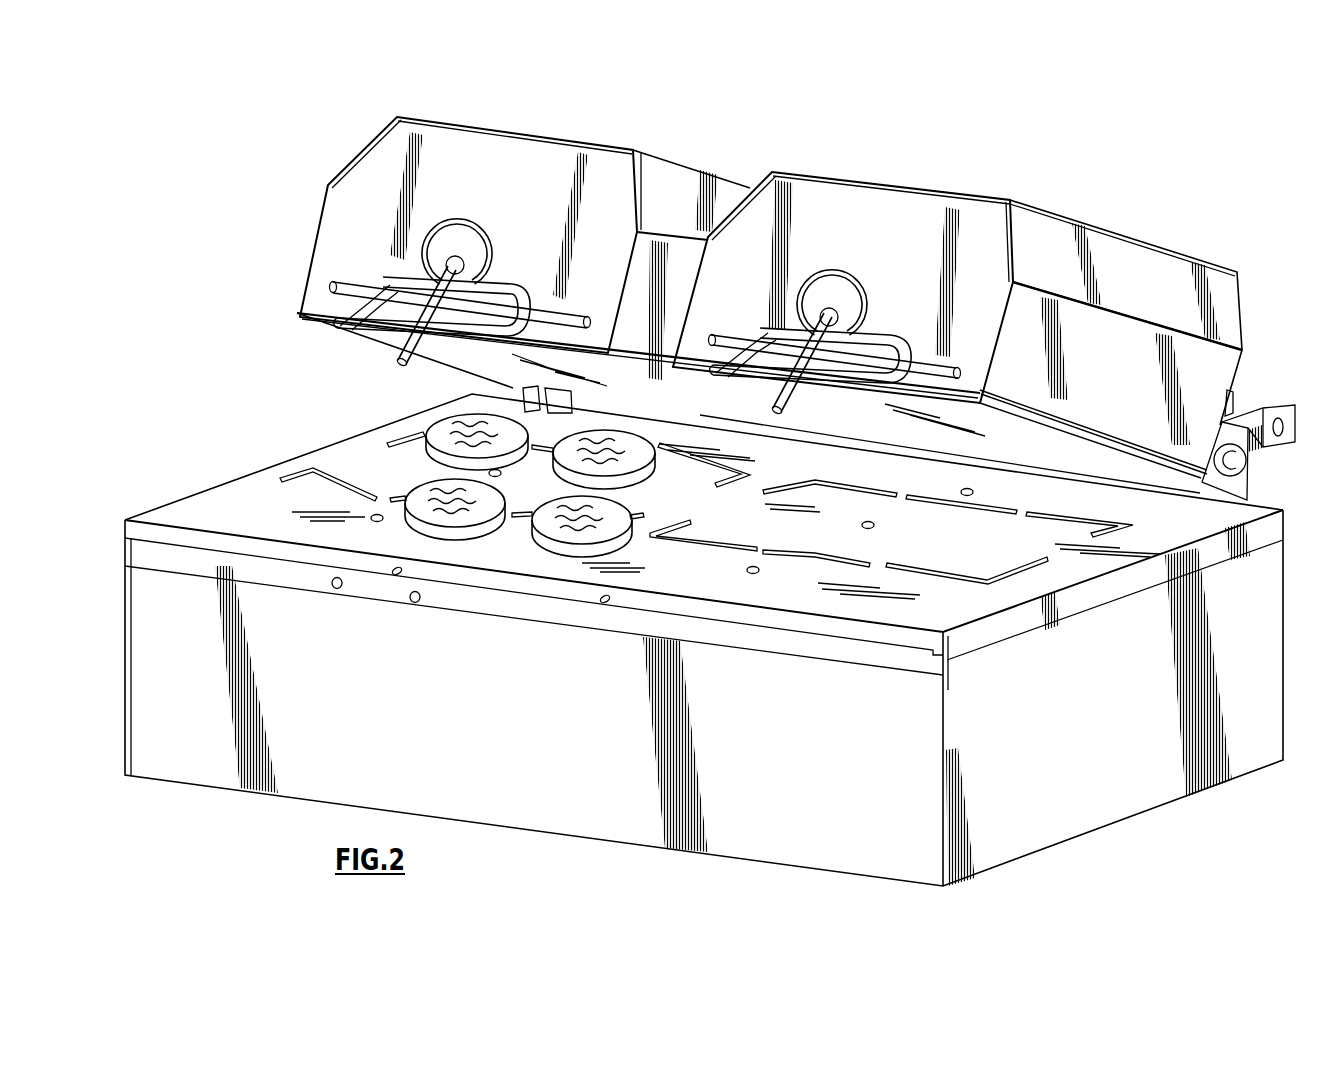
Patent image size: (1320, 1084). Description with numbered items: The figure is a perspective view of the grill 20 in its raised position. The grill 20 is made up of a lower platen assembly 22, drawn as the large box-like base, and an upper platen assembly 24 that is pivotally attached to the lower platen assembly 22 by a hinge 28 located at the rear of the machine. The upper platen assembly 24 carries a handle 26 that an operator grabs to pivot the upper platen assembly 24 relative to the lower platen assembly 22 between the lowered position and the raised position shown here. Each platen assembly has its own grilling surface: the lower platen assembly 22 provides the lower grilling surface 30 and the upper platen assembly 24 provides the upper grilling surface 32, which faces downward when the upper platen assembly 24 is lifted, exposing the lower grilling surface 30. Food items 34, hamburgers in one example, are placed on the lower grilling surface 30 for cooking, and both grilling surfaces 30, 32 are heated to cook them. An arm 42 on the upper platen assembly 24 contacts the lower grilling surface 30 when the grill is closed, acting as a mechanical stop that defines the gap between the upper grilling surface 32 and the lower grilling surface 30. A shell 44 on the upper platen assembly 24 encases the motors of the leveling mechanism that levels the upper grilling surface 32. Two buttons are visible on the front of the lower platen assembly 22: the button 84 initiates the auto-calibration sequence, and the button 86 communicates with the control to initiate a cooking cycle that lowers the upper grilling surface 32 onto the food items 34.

The grill 20 is at (968, 167).
The lower platen assembly 22 is at (1082, 560).
The upper platen assembly 24 is at (523, 147).
The handle 26 is at (877, 373).
The hinge 28 is at (1238, 466).
The lower grilling surface 30 is at (280, 495).
The upper grilling surface 32 is at (473, 353).
The food items 34 is at (643, 470).
The arm 42 is at (765, 325).
The shell 44 is at (1125, 253).
The button 84 is at (335, 589).
The button 86 is at (412, 603).